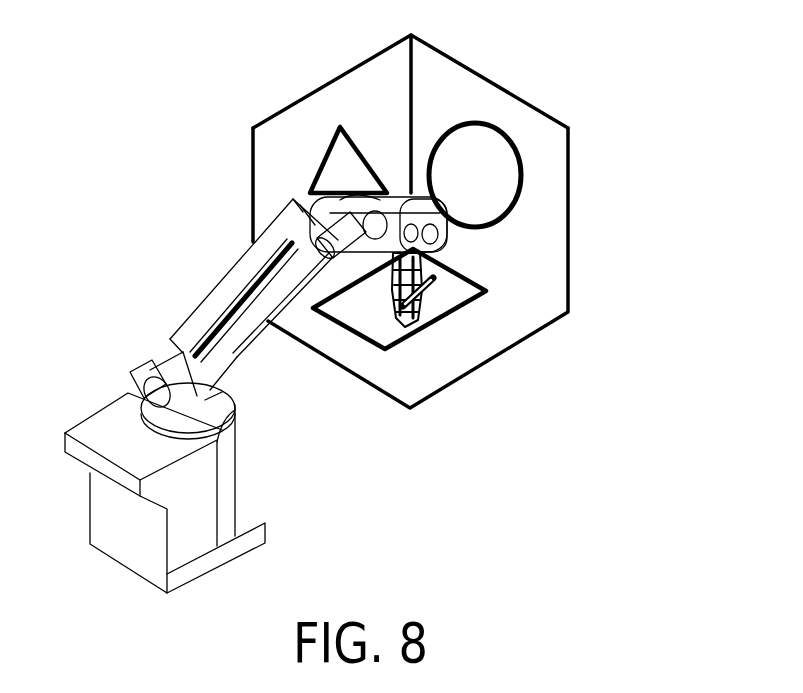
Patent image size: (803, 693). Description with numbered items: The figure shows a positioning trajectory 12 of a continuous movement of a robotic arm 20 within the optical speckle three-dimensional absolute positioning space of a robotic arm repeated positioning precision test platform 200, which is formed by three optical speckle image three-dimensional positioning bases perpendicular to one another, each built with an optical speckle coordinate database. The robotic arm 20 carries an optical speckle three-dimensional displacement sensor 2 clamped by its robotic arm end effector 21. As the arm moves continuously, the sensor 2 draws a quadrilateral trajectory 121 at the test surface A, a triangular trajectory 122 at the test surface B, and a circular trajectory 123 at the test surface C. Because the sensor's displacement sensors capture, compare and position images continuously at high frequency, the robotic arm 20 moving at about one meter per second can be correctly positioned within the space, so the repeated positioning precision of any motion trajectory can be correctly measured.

The robotic arm repeated positioning precision test platform 200 is at (144, 31).
The positioning trajectory 12 is at (552, 485).
The quadrilateral trajectory 121 is at (448, 318).
The triangular trajectory 122 is at (322, 157).
The circular trajectory 123 is at (525, 175).
The robotic arm 20 is at (223, 285).
The robotic arm end effector 21 is at (407, 315).
The optical speckle three-dimensional displacement sensor 2 is at (419, 318).